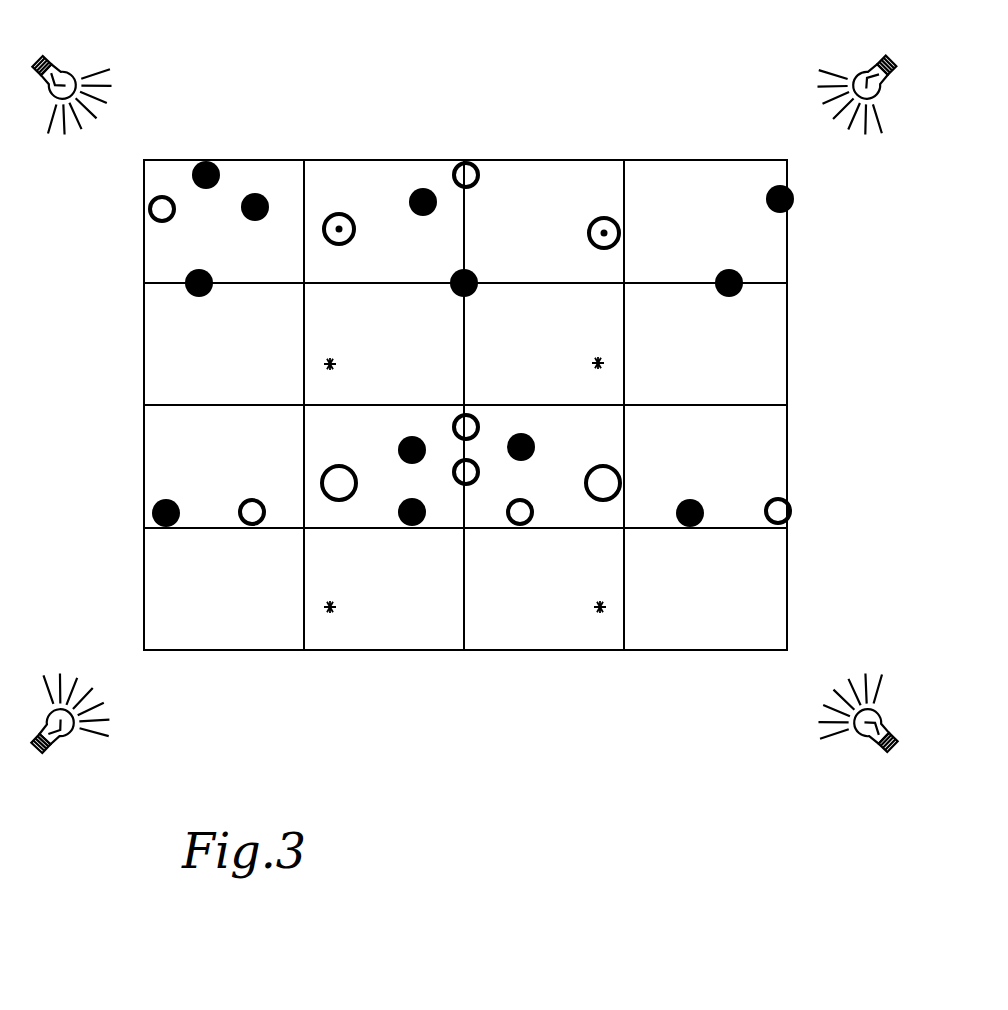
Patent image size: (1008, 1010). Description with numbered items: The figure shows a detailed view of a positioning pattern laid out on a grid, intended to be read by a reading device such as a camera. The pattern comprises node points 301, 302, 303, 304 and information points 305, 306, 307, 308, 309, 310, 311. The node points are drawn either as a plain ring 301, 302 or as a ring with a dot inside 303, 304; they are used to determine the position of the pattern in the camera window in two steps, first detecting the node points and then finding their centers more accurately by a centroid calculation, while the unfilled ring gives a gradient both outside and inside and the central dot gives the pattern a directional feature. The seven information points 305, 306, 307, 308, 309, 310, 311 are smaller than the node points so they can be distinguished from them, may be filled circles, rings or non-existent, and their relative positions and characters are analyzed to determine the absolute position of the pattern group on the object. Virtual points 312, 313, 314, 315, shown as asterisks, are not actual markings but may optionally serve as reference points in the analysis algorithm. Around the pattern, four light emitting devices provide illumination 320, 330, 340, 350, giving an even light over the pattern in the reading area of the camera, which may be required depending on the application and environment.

The node point 301 is at (320, 483).
The node point 302 is at (617, 465).
The node point 303 is at (336, 212).
The node point 304 is at (598, 216).
The information point 305 is at (405, 527).
The information point 306 is at (533, 522).
The information point 307 is at (543, 443).
The information point 308 is at (487, 420).
The information point 309 is at (405, 437).
The information point 310 is at (449, 292).
The information point 311 is at (473, 490).
The virtual point 312 is at (605, 357).
The virtual point 313 is at (323, 362).
The virtual point 314 is at (323, 600).
The virtual point 315 is at (608, 598).
The illumination 320 is at (872, 80).
The illumination 330 is at (870, 736).
The illumination 340 is at (70, 73).
The illumination 350 is at (55, 738).